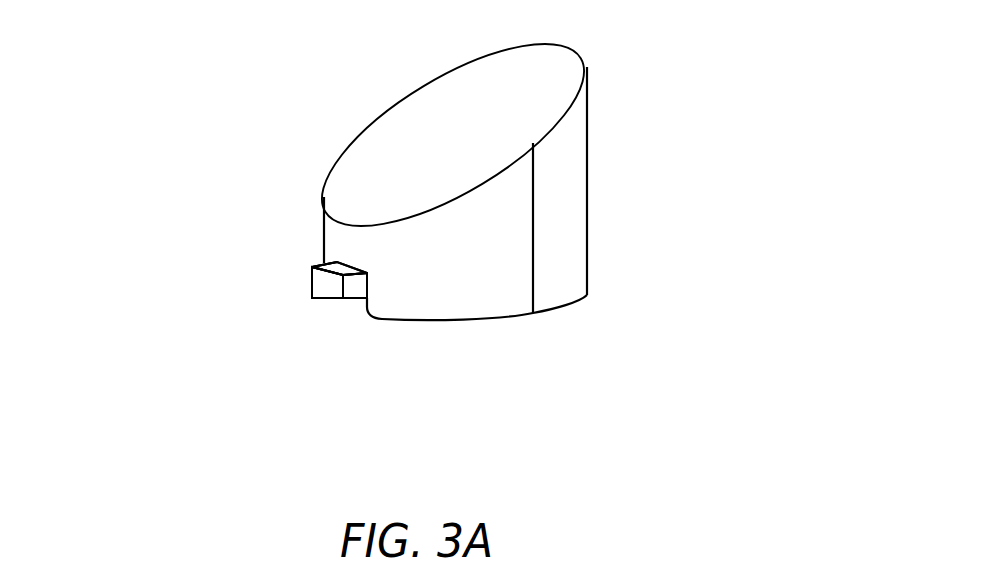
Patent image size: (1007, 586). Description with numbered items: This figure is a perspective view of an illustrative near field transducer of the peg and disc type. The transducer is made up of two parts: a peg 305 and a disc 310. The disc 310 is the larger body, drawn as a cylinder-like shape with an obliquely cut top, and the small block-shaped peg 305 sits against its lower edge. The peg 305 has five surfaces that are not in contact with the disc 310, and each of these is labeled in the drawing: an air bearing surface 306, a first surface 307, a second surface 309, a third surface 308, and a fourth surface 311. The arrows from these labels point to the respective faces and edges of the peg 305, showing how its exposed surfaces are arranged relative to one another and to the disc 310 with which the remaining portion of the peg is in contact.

The peg 305 is at (328, 312).
The air bearing surface 306 is at (320, 292).
The first surface 307 is at (356, 297).
The third surface 308 is at (342, 307).
The second surface 309 is at (344, 268).
The disc 310 is at (487, 127).
The fourth surface 311 is at (302, 261).